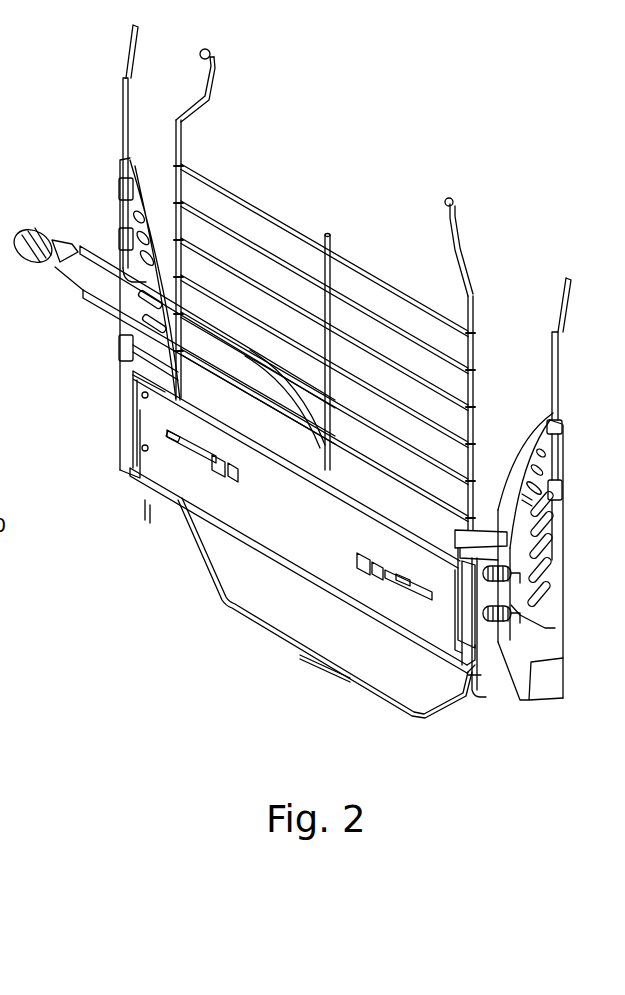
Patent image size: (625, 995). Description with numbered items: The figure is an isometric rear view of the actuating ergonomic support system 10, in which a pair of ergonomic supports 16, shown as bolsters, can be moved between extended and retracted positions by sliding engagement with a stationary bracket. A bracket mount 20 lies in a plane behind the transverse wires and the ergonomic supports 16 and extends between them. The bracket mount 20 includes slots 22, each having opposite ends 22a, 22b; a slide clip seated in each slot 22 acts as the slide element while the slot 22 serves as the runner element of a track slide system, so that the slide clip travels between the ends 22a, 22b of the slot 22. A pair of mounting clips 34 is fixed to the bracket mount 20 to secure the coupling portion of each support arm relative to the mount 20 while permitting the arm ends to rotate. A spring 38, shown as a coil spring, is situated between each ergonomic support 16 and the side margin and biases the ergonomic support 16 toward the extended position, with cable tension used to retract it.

The actuating ergonomic support system 10 is at (346, 140).
The ergonomic support 16 is at (145, 175).
The bracket mount 20 is at (263, 512).
The slot 22 is at (185, 455).
The slot end 22a is at (165, 438).
The slot end 22b is at (218, 483).
The mounting clip 34 is at (476, 645).
The spring 38 is at (512, 574).